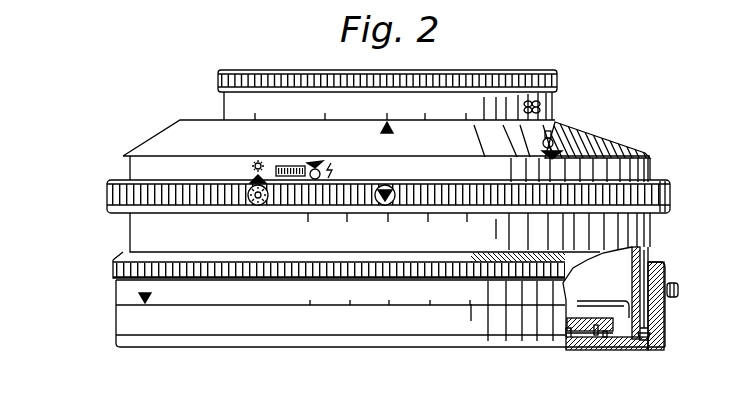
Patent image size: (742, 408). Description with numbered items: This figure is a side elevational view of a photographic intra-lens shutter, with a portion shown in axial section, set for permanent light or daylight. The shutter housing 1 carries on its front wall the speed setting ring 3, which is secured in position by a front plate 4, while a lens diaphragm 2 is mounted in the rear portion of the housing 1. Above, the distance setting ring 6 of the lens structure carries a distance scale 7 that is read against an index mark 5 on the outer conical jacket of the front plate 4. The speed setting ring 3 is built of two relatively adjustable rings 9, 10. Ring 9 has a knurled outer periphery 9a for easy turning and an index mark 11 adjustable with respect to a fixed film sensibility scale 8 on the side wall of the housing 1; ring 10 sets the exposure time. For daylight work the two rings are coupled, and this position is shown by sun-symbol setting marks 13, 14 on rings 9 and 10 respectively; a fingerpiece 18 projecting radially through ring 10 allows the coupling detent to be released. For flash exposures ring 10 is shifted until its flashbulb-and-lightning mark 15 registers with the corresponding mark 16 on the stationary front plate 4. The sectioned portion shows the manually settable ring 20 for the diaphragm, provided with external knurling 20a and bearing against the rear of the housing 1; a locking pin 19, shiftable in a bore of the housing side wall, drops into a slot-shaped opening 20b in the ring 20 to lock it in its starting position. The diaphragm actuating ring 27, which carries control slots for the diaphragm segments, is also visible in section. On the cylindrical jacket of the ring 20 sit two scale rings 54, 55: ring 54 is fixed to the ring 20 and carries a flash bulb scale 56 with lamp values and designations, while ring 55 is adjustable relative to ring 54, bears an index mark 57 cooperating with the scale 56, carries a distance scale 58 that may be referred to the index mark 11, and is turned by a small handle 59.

The shutter housing 1 is at (636, 245).
The lens diaphragm 2 is at (342, 337).
The speed setting ring 3 is at (106, 172).
The front plate 4 is at (540, 158).
The index mark 5 is at (380, 128).
The distance setting ring 6 is at (285, 80).
The distance scale 7 is at (340, 104).
The film sensibility scale 8 is at (282, 237).
The ring 9 is at (415, 193).
The knurled outer periphery 9a is at (672, 192).
The ring 10 is at (630, 172).
The index mark 11 is at (396, 192).
The setting mark 13 is at (250, 182).
The setting mark 14 is at (257, 178).
The flash mark 15 is at (317, 162).
The flash mark 16 is at (563, 151).
The fingerpiece 18 is at (283, 170).
The locking pin 19 is at (650, 265).
The manually settable ring 20 is at (668, 348).
The external knurling 20a is at (113, 268).
The opening 20b is at (644, 350).
The diaphragm actuating ring 27 is at (583, 349).
The scale ring 54 is at (666, 330).
The scale ring 55 is at (128, 280).
The flash bulb scale 56 is at (138, 334).
The index mark 57 is at (139, 297).
The distance scale 58 is at (356, 300).
The handle 59 is at (680, 289).